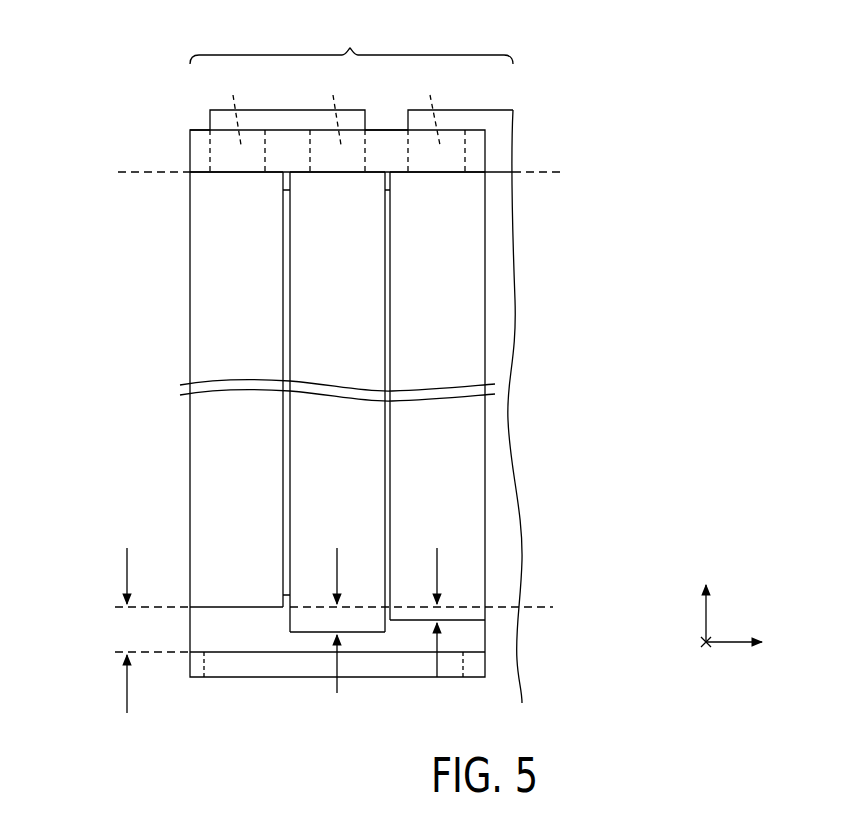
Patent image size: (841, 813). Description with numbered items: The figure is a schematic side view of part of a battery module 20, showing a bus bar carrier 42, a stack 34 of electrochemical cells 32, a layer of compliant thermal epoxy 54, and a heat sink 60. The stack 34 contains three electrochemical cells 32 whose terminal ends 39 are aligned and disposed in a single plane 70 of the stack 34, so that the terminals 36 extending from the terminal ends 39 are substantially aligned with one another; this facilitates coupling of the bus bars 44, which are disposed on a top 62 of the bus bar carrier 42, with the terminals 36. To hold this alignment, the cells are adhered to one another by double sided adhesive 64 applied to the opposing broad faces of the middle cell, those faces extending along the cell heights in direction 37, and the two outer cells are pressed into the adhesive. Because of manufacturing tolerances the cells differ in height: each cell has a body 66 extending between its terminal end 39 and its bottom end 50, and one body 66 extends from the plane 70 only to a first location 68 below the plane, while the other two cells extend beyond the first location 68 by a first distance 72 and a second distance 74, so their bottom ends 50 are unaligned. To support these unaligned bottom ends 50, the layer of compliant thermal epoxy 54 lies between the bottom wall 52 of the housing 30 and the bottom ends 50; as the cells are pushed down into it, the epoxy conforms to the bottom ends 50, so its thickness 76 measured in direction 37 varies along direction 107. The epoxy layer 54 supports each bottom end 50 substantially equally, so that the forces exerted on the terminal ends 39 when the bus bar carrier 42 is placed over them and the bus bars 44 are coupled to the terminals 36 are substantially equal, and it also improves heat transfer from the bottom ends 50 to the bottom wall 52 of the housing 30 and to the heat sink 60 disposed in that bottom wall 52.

The battery module 20 is at (82, 65).
The housing 30 is at (494, 660).
The electrochemical cells 32 is at (225, 354).
The stack of electrochemical cells 34 is at (351, 45).
The terminals 36 is at (331, 108).
The direction 37 is at (703, 618).
The terminal ends 39 is at (237, 174).
The bus bar carrier 42 is at (196, 155).
The bus bars 44 is at (281, 121).
The bottom ends 50 is at (237, 607).
The bottom wall 52 is at (478, 668).
The layer of compliant thermal epoxy 54 is at (480, 636).
The heat sink 60 is at (255, 667).
The top 62 is at (198, 130).
The double sided adhesive 64 is at (283, 292).
The body 66 is at (199, 455).
The first location 68 is at (172, 607).
The single plane 70 is at (133, 174).
The first distance 72 is at (338, 665).
The second distance 74 is at (438, 656).
The thickness 76 is at (127, 688).
The direction 107 is at (727, 644).